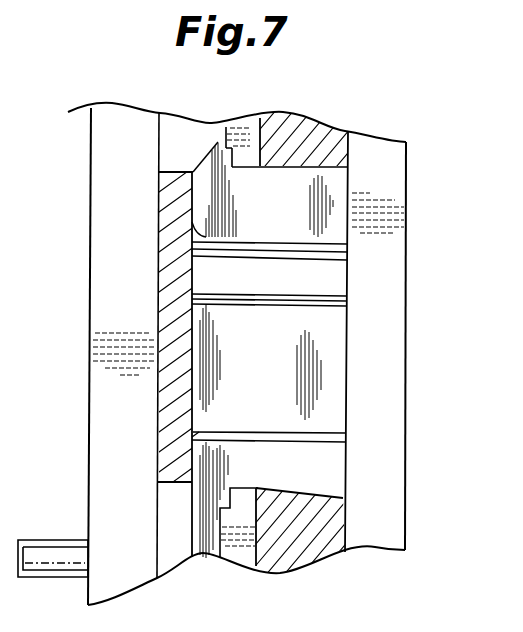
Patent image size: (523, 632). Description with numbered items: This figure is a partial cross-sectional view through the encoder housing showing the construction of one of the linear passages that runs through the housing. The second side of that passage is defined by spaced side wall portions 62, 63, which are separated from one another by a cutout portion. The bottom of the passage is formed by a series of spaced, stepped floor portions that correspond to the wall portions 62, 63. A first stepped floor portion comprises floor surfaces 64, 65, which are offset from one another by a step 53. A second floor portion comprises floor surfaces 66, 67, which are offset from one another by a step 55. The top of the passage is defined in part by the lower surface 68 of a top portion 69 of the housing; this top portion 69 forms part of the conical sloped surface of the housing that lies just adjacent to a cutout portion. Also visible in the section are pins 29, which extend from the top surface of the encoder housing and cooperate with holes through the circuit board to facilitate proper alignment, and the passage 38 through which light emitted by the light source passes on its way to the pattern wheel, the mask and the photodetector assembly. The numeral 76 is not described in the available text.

The pins 29 is at (60, 548).
The passage 38 is at (412, 275).
The step 53 is at (250, 168).
The step 55 is at (247, 514).
The side wall portion 62 is at (178, 559).
The side wall portion 63 is at (187, 160).
The floor surface 64 is at (159, 173).
The floor surface 65 is at (252, 137).
The floor surface 66 is at (192, 558).
The floor surface 67 is at (250, 548).
The lower surface 68 is at (194, 355).
The top portion 69 is at (158, 267).
The rib 76 is at (269, 221).